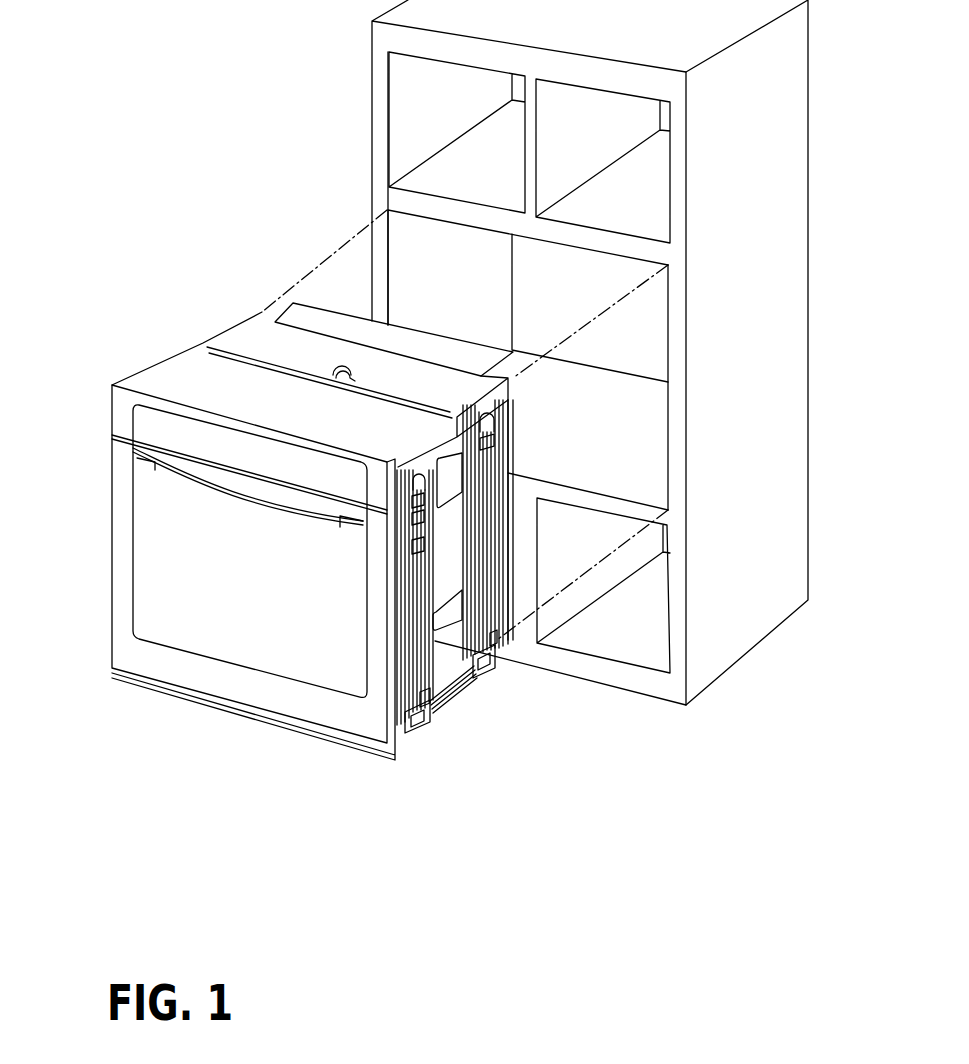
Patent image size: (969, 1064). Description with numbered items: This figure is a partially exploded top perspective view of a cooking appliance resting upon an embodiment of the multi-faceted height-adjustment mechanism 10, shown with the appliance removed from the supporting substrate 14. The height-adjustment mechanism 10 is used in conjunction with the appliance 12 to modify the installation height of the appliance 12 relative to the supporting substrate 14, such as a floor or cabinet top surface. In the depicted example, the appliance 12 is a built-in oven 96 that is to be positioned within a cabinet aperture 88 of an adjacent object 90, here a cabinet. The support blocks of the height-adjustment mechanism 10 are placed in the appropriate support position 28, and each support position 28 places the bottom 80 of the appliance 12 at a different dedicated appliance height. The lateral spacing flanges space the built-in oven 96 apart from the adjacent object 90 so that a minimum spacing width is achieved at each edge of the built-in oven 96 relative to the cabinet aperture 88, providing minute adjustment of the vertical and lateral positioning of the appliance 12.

The height-adjustment mechanism 10 is at (492, 602).
The appliance 12 is at (268, 524).
The supporting substrate 14 is at (587, 452).
The support positions 28 is at (498, 667).
The bottom of the appliance 80 is at (437, 707).
The cabinet aperture 88 is at (667, 463).
The adjacent object 90 is at (762, 255).
The built-in oven 96 is at (197, 333).